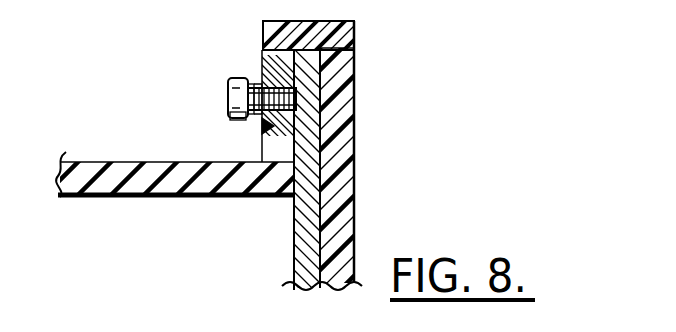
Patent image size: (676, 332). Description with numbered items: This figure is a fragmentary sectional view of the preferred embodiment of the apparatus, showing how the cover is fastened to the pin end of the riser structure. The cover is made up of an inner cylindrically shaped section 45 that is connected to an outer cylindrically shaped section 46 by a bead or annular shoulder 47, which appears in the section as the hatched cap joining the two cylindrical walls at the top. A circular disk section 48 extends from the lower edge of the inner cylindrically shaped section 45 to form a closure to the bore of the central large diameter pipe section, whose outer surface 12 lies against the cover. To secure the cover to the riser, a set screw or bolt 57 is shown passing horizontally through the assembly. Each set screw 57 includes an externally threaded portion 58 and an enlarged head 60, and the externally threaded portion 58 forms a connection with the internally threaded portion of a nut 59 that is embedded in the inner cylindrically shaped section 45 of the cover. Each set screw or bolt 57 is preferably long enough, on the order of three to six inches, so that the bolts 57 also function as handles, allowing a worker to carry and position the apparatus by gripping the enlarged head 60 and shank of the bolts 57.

The outer surface 12 is at (298, 248).
The inner cylindrically shaped section 45 is at (262, 150).
The outer cylindrically shaped section 46 is at (342, 99).
The annular shoulder 47 is at (320, 36).
The circular disk section 48 is at (99, 162).
The set screw 57 is at (230, 94).
The externally threaded portion 58 is at (256, 86).
The nut 59 is at (262, 86).
The enlarged head 60 is at (242, 118).